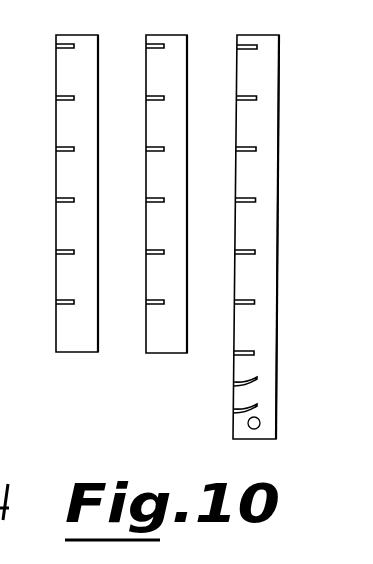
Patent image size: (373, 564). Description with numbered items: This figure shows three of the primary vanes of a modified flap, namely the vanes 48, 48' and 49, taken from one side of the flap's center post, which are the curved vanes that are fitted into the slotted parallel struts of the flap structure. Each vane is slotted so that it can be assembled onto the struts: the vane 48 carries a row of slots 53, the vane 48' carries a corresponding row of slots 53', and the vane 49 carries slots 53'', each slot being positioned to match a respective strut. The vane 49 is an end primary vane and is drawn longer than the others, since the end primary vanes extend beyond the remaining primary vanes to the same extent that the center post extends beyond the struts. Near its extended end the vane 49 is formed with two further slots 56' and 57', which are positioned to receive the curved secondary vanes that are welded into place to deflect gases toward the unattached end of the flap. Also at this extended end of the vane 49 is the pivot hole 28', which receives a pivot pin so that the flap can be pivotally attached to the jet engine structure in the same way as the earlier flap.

The primary vane 48 is at (69, 205).
The primary vane 48' is at (158, 205).
The end primary vane 49 is at (267, 418).
The slot 53 is at (44, 170).
The slot 53' is at (138, 170).
The slot 53'' is at (224, 195).
The slot 56' is at (220, 382).
The slot 57' is at (220, 408).
The pivot hole 28' is at (221, 427).